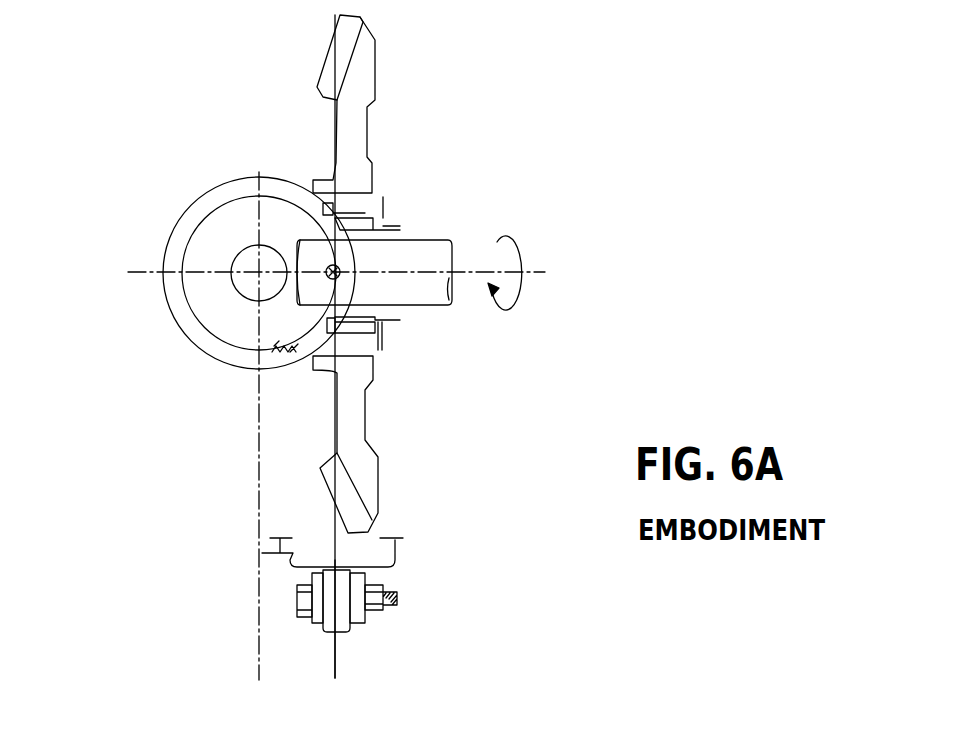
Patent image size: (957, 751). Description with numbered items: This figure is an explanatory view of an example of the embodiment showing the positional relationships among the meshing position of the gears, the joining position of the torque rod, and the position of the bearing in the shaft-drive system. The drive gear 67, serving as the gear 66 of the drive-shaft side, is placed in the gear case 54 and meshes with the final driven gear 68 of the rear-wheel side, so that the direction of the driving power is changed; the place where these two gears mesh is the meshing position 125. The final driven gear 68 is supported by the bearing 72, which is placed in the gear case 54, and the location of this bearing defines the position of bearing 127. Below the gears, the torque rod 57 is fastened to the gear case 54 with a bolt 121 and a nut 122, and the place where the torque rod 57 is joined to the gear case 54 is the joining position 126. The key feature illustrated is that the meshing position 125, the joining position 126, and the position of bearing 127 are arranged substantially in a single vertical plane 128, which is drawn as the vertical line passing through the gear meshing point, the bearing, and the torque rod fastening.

The gear of the drive-shaft side 66 is at (176, 239).
The drive gear 67 is at (194, 238).
The final driven gear 68 is at (363, 481).
The bearing 72 is at (378, 326).
The meshing position 125 is at (340, 270).
The position of bearing 127 is at (365, 216).
The gear case 54 is at (272, 553).
The torque rod 57 is at (320, 617).
The bolt 121 is at (297, 600).
The nut 122 is at (398, 571).
The joining position 126 is at (347, 605).
The single vertical plane 128 is at (337, 667).